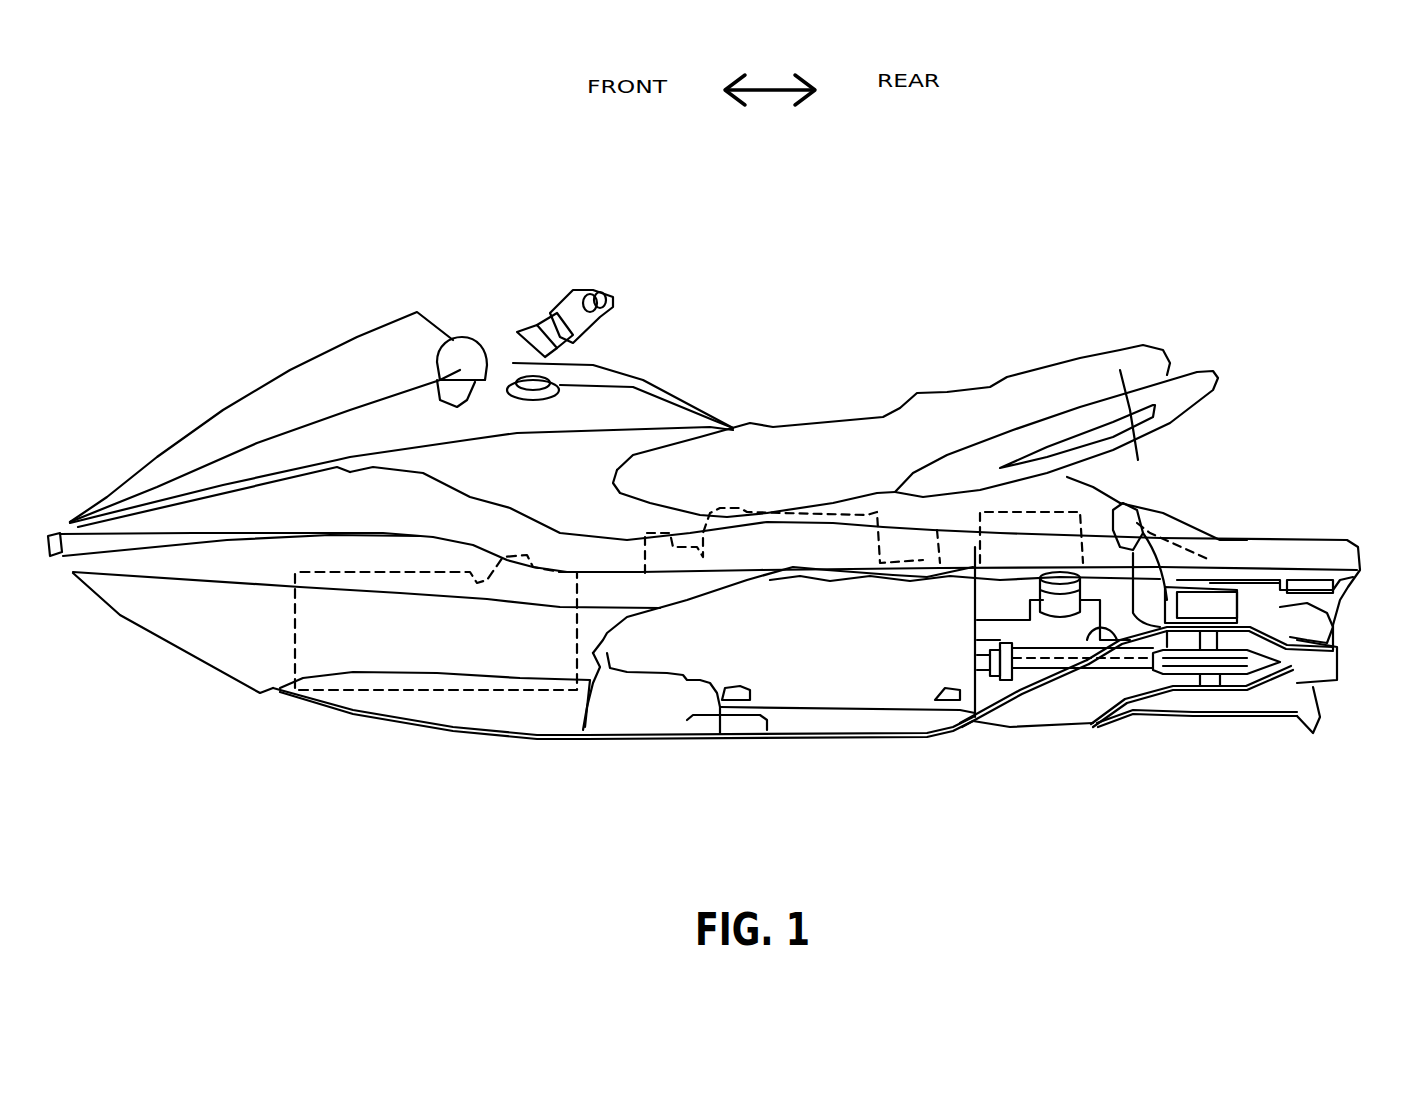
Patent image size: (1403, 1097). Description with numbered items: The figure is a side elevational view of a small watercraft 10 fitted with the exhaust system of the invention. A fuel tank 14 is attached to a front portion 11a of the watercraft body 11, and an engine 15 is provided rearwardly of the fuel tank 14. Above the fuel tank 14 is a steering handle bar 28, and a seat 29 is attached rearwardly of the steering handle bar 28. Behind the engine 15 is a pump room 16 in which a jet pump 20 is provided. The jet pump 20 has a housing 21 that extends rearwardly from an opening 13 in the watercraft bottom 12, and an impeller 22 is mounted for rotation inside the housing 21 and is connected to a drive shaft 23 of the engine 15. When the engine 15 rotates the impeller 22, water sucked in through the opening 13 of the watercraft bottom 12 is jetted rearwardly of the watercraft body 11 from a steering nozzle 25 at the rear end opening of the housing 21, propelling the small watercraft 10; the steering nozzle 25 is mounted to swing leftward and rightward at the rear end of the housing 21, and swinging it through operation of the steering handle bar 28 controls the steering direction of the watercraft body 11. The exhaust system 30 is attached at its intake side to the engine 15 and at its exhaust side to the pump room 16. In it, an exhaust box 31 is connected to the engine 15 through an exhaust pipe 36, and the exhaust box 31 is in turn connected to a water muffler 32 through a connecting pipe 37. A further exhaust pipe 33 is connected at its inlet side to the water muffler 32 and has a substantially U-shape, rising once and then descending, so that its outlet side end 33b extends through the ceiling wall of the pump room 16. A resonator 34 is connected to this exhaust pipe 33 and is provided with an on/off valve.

The small watercraft 10 is at (445, 202).
The watercraft body 11 is at (343, 367).
The front portion 11a is at (240, 643).
The watercraft bottom 12 is at (890, 740).
The opening 13 is at (1043, 717).
The fuel tank 14 is at (453, 643).
The engine 15 is at (803, 668).
The pump room 16 is at (1133, 700).
The jet pump 20 is at (1217, 700).
The housing 21 is at (1080, 672).
The impeller 22 is at (1187, 688).
The drive shaft 23 is at (1020, 697).
The steering nozzle 25 is at (1327, 680).
The steering handle bar 28 is at (610, 300).
The seat 29 is at (863, 433).
The exhaust system 30 is at (1162, 533).
The exhaust box 31 is at (1020, 513).
The water muffler 32 is at (1030, 617).
The exhaust pipe 33 is at (1127, 513).
The outlet side end 33b is at (1243, 560).
The resonator 34 is at (1250, 577).
The exhaust pipe 36 is at (960, 525).
The connecting pipe 37 is at (1063, 572).